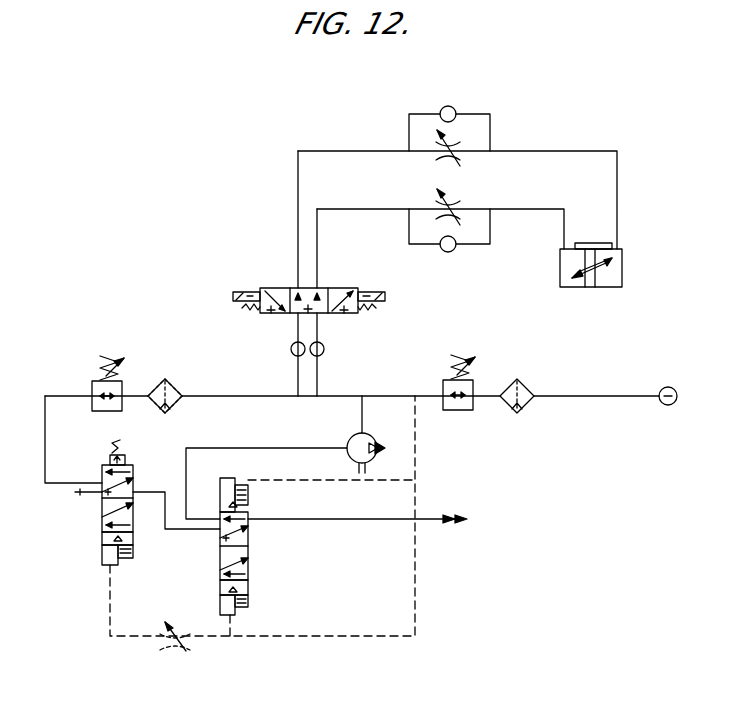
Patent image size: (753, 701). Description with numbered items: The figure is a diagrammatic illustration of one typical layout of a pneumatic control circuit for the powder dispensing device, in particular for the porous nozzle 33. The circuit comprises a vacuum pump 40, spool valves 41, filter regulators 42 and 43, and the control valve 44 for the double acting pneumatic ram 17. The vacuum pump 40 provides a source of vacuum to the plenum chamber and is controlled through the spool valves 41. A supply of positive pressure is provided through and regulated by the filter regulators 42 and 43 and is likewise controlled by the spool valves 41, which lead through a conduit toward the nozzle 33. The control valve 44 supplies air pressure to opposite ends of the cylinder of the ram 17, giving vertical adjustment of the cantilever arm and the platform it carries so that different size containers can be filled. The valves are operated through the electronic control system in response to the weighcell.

The double acting pneumatic ram 17 is at (623, 270).
The porous nozzle 33 is at (378, 523).
The vacuum pump 40 is at (352, 441).
The spool valves 41 is at (218, 560).
The filter regulator 42 is at (452, 356).
The filter regulator 43 is at (92, 378).
The control valve 44 is at (273, 287).